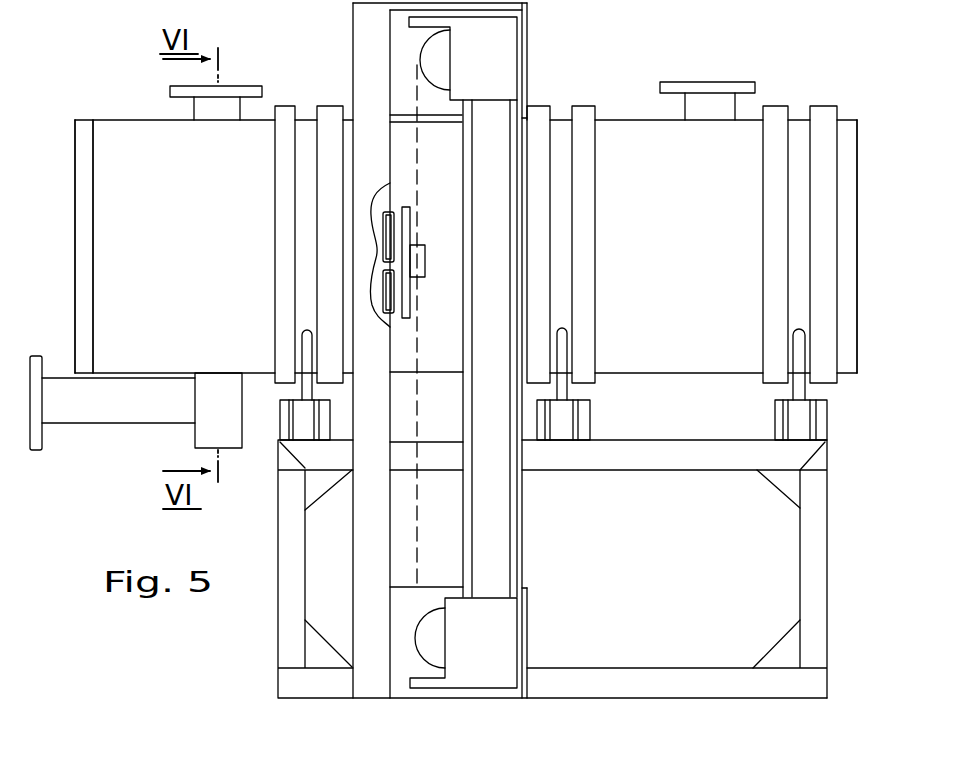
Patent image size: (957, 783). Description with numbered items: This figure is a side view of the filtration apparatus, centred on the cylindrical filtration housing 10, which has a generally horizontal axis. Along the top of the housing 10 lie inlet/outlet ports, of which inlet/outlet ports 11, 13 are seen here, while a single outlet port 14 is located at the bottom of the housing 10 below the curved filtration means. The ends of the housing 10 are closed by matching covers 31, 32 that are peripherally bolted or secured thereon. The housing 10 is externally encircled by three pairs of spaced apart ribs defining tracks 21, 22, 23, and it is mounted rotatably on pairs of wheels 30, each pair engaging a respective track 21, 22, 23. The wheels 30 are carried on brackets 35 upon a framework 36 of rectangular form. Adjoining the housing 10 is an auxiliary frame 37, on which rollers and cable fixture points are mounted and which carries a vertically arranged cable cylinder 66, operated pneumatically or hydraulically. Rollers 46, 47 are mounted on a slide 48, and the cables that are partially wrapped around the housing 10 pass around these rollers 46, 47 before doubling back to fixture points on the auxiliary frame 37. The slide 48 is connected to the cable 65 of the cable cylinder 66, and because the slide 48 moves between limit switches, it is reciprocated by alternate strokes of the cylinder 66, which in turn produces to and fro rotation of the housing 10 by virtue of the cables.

The cylindrical filtration housing 10 is at (143, 112).
The inlet/outlet port 11 is at (223, 108).
The inlet/outlet port 13 is at (706, 100).
The outlet port 14 is at (212, 383).
The track 21 is at (306, 118).
The track 22 is at (555, 118).
The track 23 is at (797, 118).
The wheels 30 is at (303, 350).
The cover 31 is at (80, 140).
The cover 32 is at (848, 150).
The brackets 35 is at (285, 430).
The framework 36 is at (818, 498).
The auxiliary frame 37 is at (372, 674).
The roller 46 is at (385, 286).
The roller 47 is at (385, 228).
The slide 48 is at (404, 222).
The cable 65 is at (420, 365).
The cable cylinder 66 is at (505, 552).